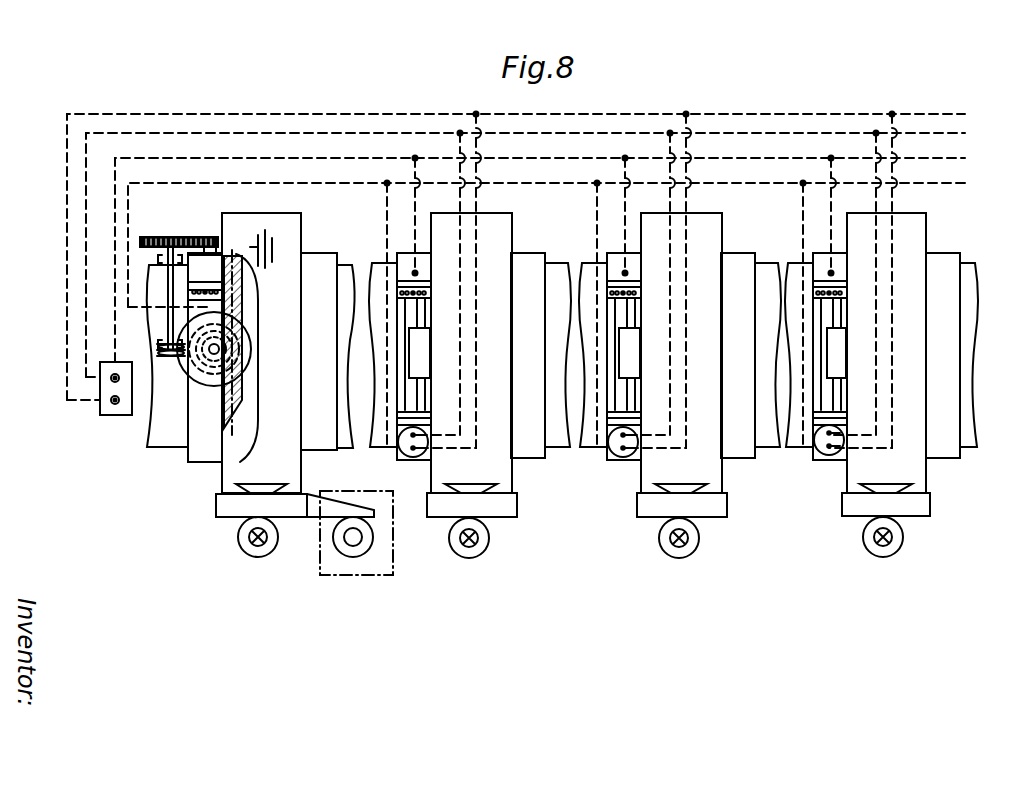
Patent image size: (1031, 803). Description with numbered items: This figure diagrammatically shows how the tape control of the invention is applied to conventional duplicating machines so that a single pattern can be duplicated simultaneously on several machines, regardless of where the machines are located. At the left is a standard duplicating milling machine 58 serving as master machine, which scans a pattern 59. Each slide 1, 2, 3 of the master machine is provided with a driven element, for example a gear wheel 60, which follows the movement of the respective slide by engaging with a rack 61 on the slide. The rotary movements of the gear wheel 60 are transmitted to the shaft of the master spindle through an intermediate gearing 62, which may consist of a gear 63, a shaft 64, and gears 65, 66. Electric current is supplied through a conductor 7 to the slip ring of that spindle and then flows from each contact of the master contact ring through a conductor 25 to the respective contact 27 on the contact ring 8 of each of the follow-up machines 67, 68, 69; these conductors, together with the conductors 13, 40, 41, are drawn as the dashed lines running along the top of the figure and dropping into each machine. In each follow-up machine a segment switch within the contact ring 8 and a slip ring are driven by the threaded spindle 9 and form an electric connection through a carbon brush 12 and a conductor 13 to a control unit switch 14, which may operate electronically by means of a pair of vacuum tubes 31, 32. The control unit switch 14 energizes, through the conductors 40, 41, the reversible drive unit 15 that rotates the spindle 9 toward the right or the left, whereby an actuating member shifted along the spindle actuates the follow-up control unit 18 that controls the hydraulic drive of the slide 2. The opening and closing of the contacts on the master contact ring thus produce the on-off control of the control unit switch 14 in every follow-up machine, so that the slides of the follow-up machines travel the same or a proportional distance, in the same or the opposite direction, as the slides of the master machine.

The slide 1 is at (326, 452).
The slide 2 is at (294, 228).
The slide 3 is at (228, 513).
The conductor 7 is at (243, 257).
The contact ring 8 is at (405, 299).
The threaded spindle 9 is at (410, 321).
The carbon brush 12 is at (417, 272).
The conductor 13 is at (314, 158).
The control unit switch 14 is at (126, 415).
The reversible drive unit 15 is at (403, 458).
The follow-up control unit 18 is at (413, 366).
The conductor 25 is at (128, 280).
The contact 27 is at (430, 292).
The vacuum tube 31 is at (113, 405).
The vacuum tube 32 is at (111, 382).
The conductor 40 is at (240, 133).
The conductor 41 is at (187, 114).
The duplicating milling machine 58 is at (206, 481).
The pattern 59 is at (332, 570).
The gear wheel 60 is at (211, 385).
The rack 61 is at (235, 408).
The intermediate gearing 62 is at (163, 228).
The gear 63 is at (169, 360).
The shaft 64 is at (165, 316).
The gear 65 is at (175, 245).
The gear 66 is at (211, 243).
The follow-up machine 67 is at (525, 484).
The follow-up machine 68 is at (732, 486).
The follow-up machine 69 is at (937, 482).